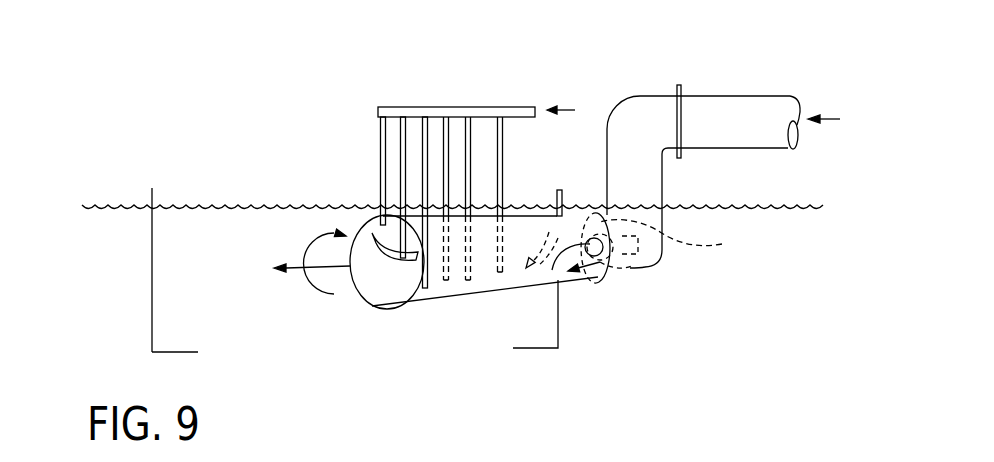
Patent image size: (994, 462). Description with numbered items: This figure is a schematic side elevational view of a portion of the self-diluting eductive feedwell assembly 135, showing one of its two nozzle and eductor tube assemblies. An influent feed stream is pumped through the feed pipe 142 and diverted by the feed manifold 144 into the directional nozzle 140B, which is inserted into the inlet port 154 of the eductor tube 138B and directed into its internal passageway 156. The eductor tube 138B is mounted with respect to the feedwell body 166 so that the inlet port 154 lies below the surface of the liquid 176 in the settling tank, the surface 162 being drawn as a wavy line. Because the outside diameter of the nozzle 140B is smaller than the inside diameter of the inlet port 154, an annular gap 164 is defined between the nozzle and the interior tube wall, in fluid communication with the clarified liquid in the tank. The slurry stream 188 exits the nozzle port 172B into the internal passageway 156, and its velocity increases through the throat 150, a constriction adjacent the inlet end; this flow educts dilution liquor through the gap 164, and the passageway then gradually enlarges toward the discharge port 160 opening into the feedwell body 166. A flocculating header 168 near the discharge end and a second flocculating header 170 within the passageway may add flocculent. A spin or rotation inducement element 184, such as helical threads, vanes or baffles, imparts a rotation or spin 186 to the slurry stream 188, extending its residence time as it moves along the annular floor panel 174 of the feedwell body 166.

The feedwell assembly 135 is at (152, 188).
The eductor tube 138B is at (447, 300).
The directional nozzle 140B is at (612, 268).
The feed pipe 142 is at (767, 97).
The feed manifold 144 is at (665, 190).
The throat 150 is at (559, 203).
The inlet port 154 is at (600, 270).
The internal passageway 156 is at (603, 283).
The discharge port 160 is at (383, 280).
The water surface 162 is at (756, 209).
The annular gap 164 is at (600, 216).
The feedwell body 166 is at (152, 295).
The flocculating header 168 is at (472, 107).
The second flocculating header 170 is at (442, 202).
The nozzle port 172B is at (633, 255).
The annular floor panel 174 is at (165, 352).
The liquid 176 is at (135, 259).
The spin or rotation inducement element 184 is at (413, 261).
The rotation or spin 186 is at (303, 252).
The slurry stream 188 is at (367, 262).